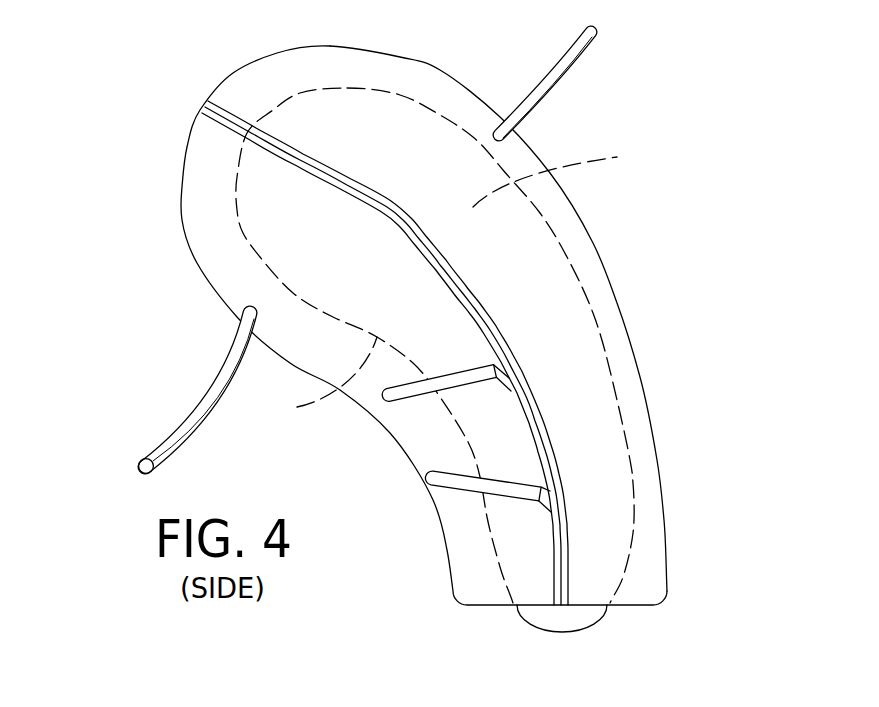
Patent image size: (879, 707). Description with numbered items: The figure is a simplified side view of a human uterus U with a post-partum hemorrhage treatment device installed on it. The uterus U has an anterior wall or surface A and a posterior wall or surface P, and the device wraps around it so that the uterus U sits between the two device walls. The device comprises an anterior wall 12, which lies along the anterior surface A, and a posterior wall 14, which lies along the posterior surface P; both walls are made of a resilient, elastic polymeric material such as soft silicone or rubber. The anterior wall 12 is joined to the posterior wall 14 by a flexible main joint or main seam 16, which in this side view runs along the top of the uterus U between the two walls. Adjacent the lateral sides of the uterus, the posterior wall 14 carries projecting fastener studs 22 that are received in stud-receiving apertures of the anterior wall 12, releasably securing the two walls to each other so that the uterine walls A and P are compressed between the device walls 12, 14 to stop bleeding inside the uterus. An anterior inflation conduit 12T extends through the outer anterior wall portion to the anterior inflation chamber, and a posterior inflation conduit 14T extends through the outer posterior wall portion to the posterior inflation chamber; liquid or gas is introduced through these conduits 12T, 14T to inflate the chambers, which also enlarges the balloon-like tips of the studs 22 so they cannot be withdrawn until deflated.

The anterior wall 12 is at (197, 263).
The posterior wall 14 is at (617, 303).
The main seam 16 is at (204, 106).
The anterior inflation conduit 12T is at (182, 407).
The posterior inflation conduit 14T is at (555, 82).
The fastener stud 22 is at (417, 400).
The anterior wall of the uterus A is at (327, 379).
The uterus U is at (555, 178).
The posterior wall of the uterus P is at (567, 253).